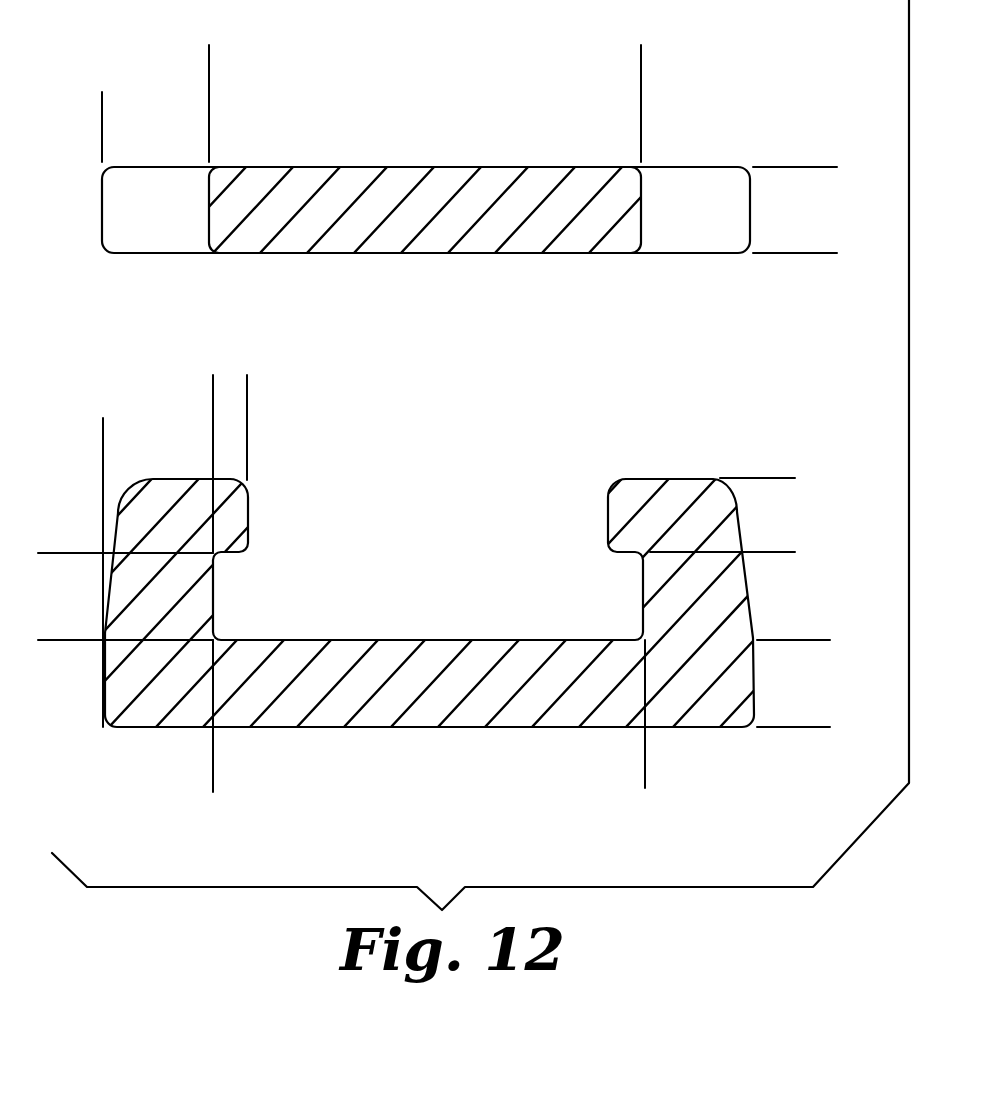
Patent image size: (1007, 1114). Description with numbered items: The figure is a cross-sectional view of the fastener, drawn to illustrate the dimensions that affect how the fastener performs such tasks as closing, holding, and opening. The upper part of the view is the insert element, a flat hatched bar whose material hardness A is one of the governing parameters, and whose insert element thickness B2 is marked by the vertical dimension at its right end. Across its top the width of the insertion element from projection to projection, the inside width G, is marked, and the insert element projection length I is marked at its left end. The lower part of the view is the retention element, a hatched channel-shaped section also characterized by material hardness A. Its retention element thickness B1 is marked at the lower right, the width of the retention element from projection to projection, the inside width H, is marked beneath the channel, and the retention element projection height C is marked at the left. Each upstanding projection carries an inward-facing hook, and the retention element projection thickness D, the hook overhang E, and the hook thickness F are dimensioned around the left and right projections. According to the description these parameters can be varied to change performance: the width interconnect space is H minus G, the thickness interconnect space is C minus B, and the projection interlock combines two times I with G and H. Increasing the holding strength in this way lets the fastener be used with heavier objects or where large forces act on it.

The material hardness A is at (582, 235).
The retention element thickness B1 is at (811, 590).
The insert element thickness B2 is at (818, 115).
The retention element projection height C is at (55, 505).
The retention element projection thickness D is at (213, 438).
The hook overhang E is at (163, 392).
The hook thickness F is at (776, 552).
The width of the insertion element from projection to projection (inside width) G is at (641, 64).
The width of the retention element from projection to projection (inside width) H is at (645, 772).
The insert element projection length I is at (209, 110).